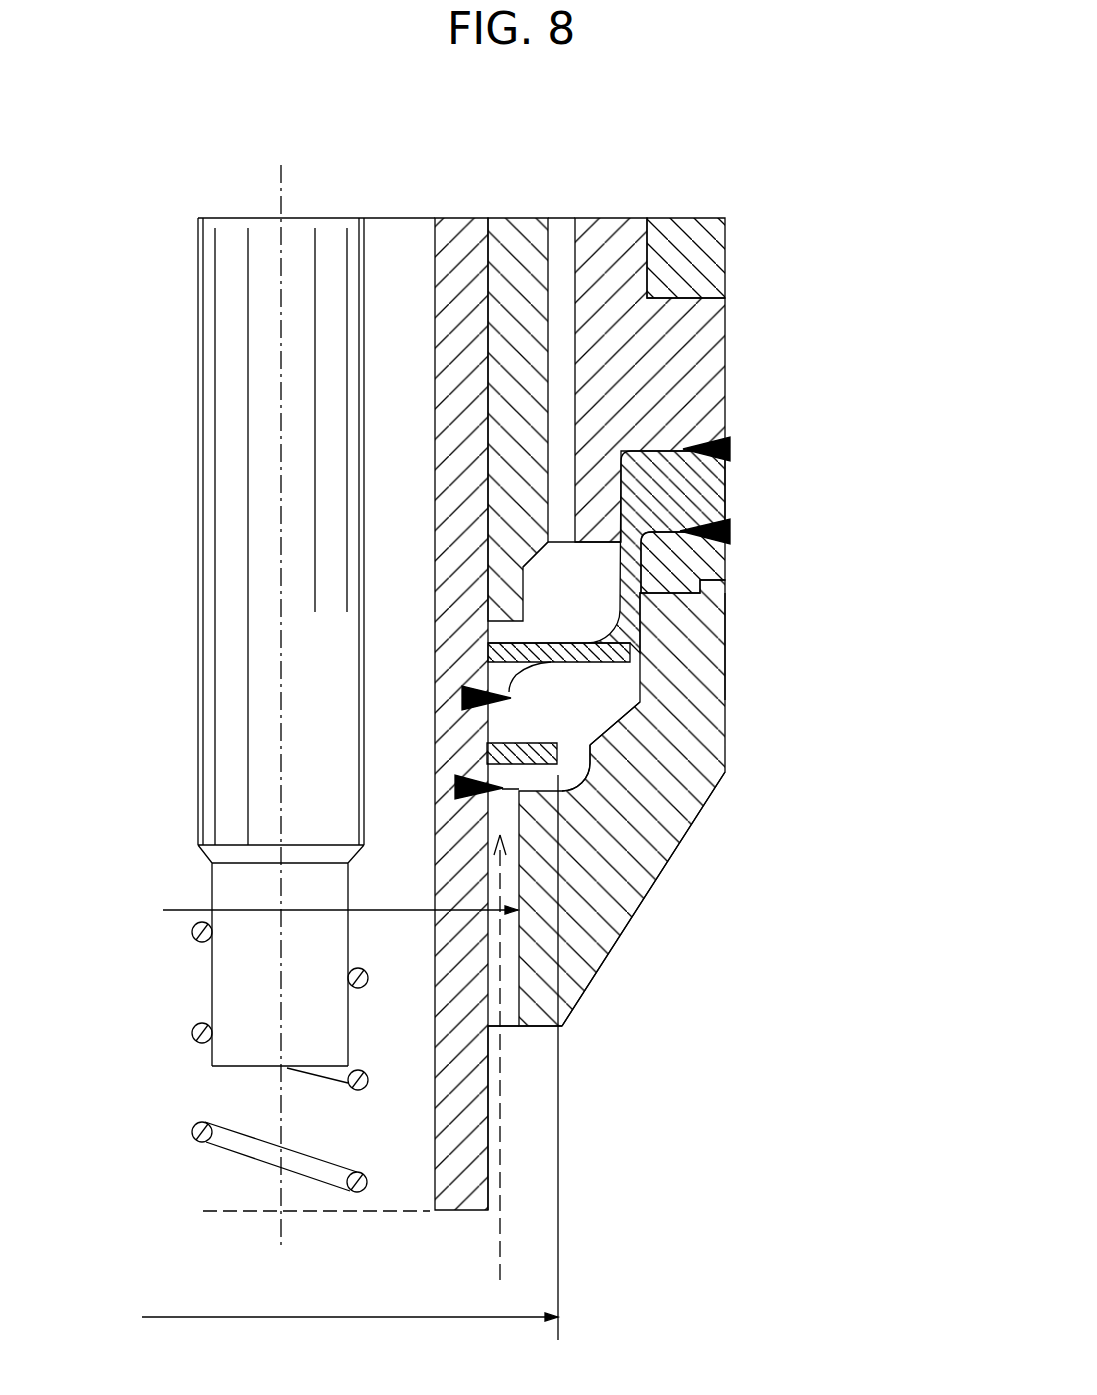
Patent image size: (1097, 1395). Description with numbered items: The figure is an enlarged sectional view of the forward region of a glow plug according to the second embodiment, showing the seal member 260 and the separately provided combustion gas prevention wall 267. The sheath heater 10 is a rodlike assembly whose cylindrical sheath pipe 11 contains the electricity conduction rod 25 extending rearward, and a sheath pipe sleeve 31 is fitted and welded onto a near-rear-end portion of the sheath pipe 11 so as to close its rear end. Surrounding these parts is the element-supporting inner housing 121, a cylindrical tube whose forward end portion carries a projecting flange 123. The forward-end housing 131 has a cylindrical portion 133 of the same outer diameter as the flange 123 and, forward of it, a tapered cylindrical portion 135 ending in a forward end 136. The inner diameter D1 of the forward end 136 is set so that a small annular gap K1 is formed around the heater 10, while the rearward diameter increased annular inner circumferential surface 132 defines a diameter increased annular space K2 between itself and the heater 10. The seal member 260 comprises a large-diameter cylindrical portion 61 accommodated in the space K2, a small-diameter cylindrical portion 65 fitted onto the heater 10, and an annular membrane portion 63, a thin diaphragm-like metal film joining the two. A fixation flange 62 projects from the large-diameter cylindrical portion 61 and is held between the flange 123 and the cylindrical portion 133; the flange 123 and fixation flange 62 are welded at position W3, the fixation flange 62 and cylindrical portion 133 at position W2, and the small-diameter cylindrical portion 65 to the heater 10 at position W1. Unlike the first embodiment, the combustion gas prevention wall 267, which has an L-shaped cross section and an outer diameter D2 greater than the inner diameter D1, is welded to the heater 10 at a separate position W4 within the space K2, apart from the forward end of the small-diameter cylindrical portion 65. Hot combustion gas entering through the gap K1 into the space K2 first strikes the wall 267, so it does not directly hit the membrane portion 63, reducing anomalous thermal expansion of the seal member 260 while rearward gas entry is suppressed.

The sheath heater 10 is at (499, 1169).
The sheath pipe 11 is at (460, 222).
The electricity conduction rod 25 is at (203, 692).
The sheath pipe sleeve 31 is at (522, 222).
The large-diameter cylindrical portion 61 is at (710, 582).
The fixation flange 62 is at (715, 508).
The annular membrane portion 63 is at (554, 643).
The small-diameter cylindrical portion 65 is at (514, 689).
The element-supporting inner housing 121 is at (717, 243).
The flange 123 is at (708, 337).
The forward-end housing 131 is at (704, 836).
The diameter increased annular inner circumferential surface 132 is at (587, 736).
The cylindrical portion 133 is at (718, 642).
The tapered cylindrical portion 135 is at (647, 897).
The forward end 136 is at (536, 1027).
The seal member 260 is at (739, 492).
The combustion gas prevention wall 267 is at (533, 743).
The small annular gap K1 is at (507, 962).
The diameter increased annular space K2 is at (613, 678).
The welding position W1 is at (470, 690).
The welding position W2 is at (725, 540).
The welding position W3 is at (725, 448).
The welding position W4 is at (462, 798).
The inner diameter D1 is at (340, 898).
The outer diameter D2 is at (350, 1057).